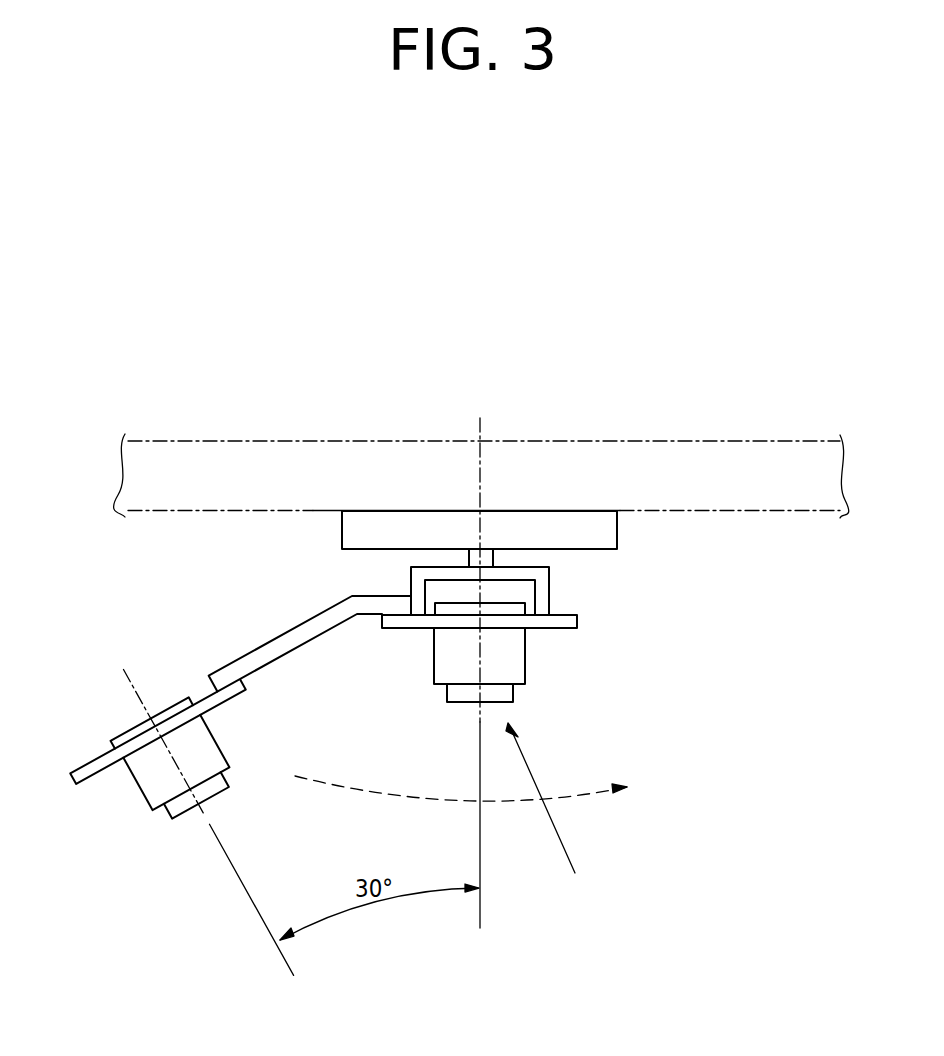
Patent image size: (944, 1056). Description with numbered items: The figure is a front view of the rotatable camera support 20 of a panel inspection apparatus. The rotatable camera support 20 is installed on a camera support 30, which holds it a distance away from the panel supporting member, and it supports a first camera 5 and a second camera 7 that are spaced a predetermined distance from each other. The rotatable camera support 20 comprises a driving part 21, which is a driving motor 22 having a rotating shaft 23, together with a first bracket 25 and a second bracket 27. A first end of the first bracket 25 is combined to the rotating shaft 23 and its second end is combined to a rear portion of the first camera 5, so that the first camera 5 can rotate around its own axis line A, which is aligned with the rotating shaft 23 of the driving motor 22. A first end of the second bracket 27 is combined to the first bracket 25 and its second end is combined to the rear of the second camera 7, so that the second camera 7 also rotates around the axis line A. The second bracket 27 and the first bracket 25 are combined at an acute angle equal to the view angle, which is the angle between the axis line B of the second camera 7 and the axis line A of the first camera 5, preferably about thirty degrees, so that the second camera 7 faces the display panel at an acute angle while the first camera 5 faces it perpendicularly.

The camera support 30 is at (738, 440).
The driving part 21 is at (549, 552).
The driving motor 22 is at (618, 533).
The rotating shaft 23 is at (491, 559).
The first bracket 25 is at (550, 600).
The first camera 5 is at (520, 658).
The second bracket 27 is at (238, 660).
The second camera 7 is at (153, 813).
The rotatable camera support 20 is at (600, 900).
The axis line of the first camera A is at (478, 437).
The axis line of the second camera B is at (123, 672).